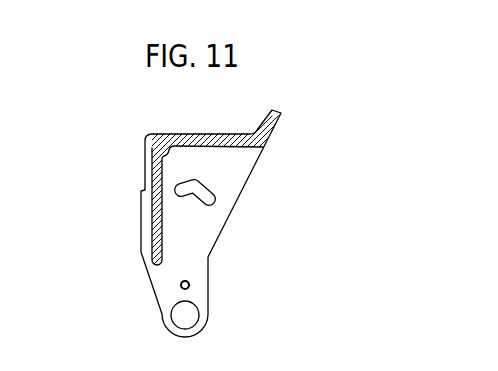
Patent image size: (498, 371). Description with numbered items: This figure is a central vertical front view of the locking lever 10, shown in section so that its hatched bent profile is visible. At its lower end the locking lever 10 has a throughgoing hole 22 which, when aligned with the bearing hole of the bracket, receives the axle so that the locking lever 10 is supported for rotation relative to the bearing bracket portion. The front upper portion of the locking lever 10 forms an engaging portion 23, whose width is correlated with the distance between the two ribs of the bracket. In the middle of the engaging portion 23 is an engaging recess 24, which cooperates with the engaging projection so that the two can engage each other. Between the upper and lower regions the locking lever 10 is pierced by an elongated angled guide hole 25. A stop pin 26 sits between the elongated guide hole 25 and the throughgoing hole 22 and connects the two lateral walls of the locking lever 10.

The locking lever 10 is at (305, 120).
The throughgoing hole 22 is at (199, 315).
The engaging portion 23 is at (150, 134).
The engaging recess 24 is at (150, 148).
The elongated angled guide hole 25 is at (216, 195).
The stop pin 26 is at (190, 286).